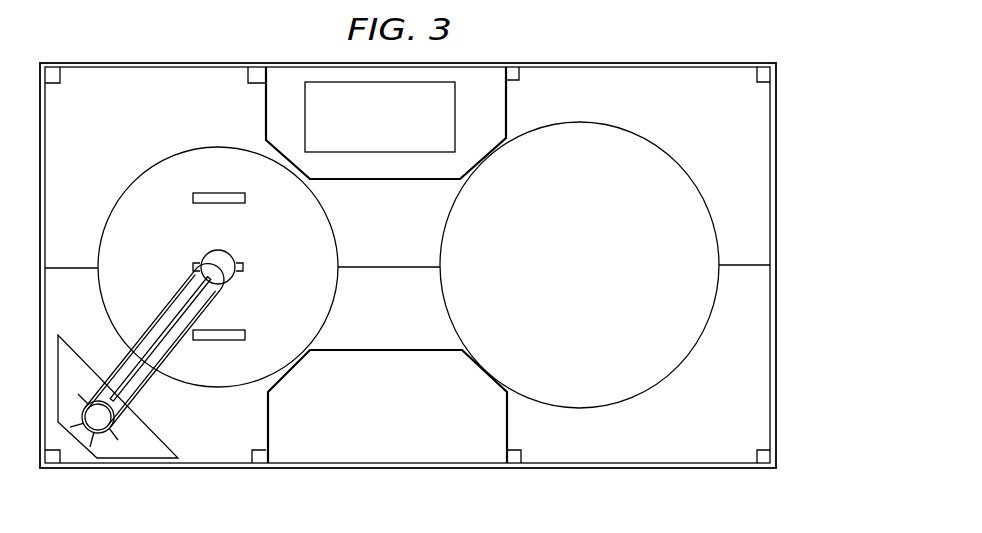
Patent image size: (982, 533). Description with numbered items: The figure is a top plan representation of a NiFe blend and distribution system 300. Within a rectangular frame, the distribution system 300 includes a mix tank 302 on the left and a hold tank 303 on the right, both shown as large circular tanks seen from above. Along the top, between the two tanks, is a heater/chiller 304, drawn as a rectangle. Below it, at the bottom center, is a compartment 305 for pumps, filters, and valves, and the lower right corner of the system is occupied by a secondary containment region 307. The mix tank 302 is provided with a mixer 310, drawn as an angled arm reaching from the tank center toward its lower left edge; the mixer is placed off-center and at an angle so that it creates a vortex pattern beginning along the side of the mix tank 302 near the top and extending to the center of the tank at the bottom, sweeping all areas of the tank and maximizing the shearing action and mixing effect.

The NiFe blend and distribution system 300 is at (171, 516).
The mix tank 302 is at (140, 173).
The hold tank 303 is at (638, 135).
The heater/chiller 304 is at (483, 103).
The compartment 305 is at (323, 432).
The secondary containment region 307 is at (707, 443).
The mixer 310 is at (158, 385).